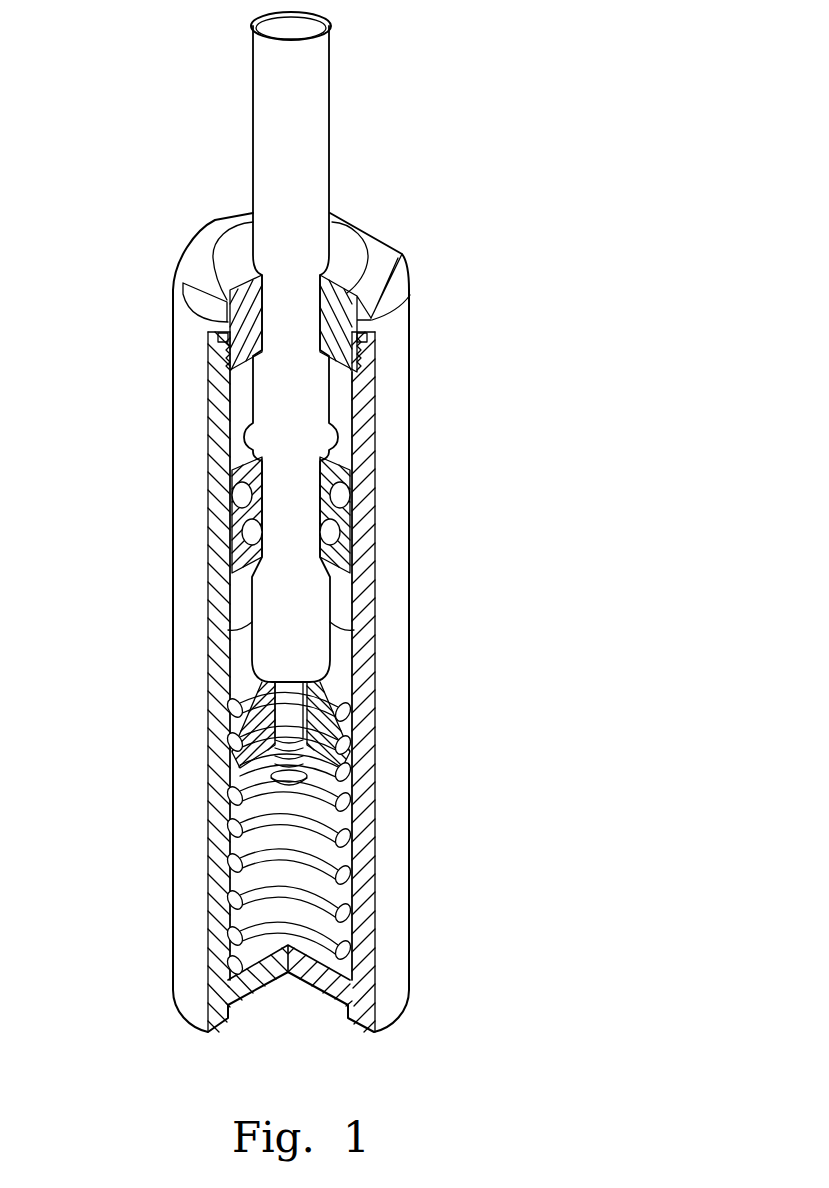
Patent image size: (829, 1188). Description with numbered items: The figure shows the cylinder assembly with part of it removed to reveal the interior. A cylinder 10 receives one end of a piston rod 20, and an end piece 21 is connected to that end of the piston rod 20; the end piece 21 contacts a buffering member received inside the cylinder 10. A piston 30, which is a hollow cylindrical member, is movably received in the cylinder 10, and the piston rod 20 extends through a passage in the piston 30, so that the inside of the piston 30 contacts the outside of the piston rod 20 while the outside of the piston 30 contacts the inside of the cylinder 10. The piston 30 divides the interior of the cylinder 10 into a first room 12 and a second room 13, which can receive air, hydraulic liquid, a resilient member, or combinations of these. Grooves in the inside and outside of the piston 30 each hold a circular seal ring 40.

The cylinder 10 is at (185, 869).
The first room 12 is at (342, 383).
The second room 13 is at (342, 590).
The piston rod 20 is at (322, 163).
The end piece 21 is at (342, 658).
The piston 30 is at (347, 541).
The seal ring 40 is at (240, 498).